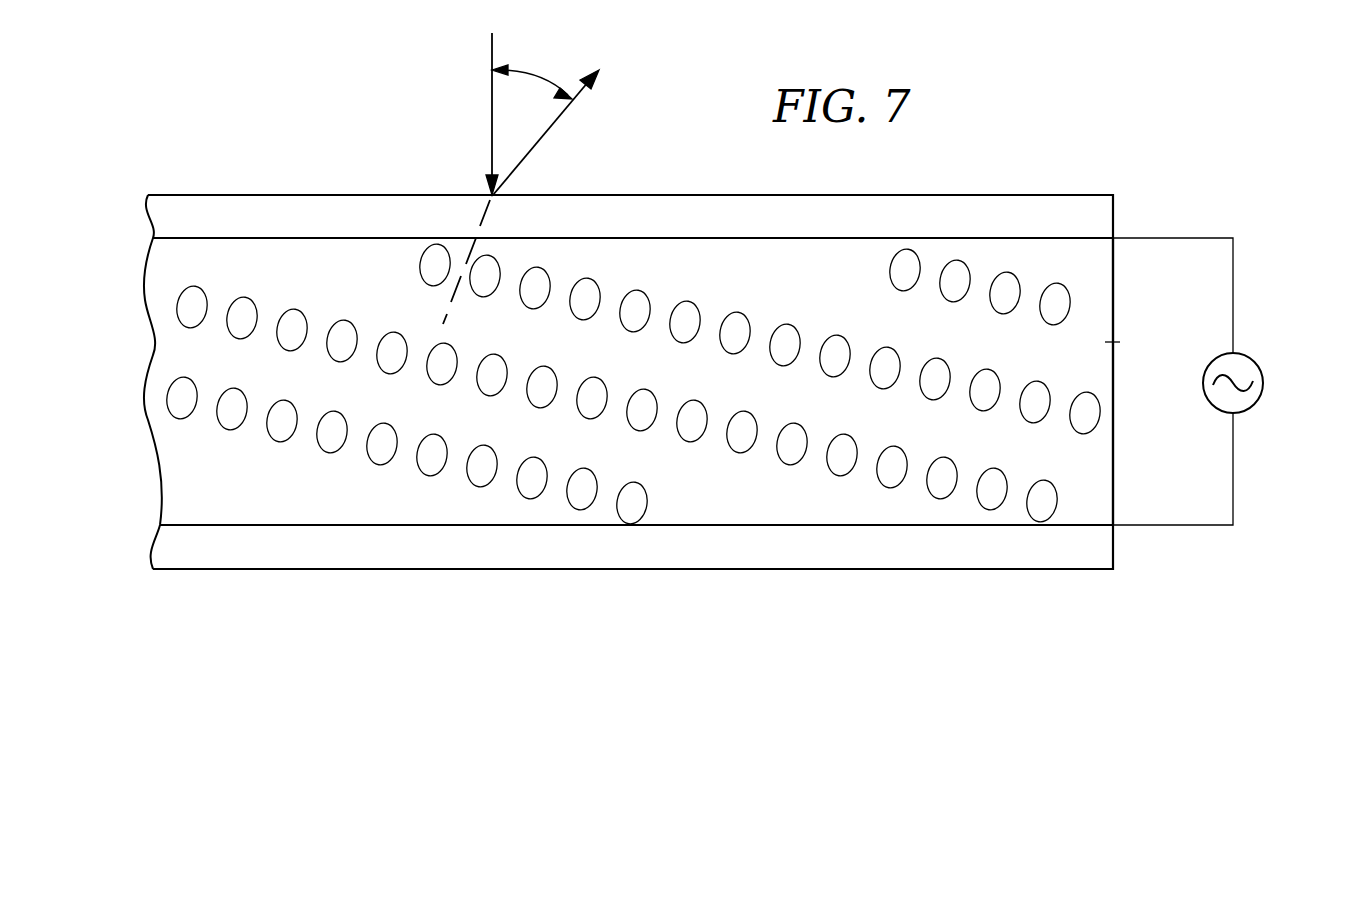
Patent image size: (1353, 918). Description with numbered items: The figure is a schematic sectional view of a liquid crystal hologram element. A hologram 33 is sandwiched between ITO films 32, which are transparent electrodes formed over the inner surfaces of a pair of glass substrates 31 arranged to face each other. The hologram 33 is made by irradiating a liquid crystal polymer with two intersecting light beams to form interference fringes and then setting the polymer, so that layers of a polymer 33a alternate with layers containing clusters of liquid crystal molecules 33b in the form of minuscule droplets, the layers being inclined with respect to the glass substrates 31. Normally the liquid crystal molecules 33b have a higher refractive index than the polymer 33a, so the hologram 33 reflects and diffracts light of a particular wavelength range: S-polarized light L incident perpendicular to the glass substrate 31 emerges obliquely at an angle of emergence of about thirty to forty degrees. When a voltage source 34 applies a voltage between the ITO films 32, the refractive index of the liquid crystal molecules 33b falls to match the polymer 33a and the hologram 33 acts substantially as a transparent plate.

The glass substrate 31 is at (667, 200).
The ITO film 32 is at (835, 240).
The hologram 33 is at (125, 240).
The polymer 33a is at (1113, 342).
The liquid crystal molecules 33b is at (750, 318).
The voltage source 34 is at (1262, 387).
The S-polarized light L is at (492, 117).